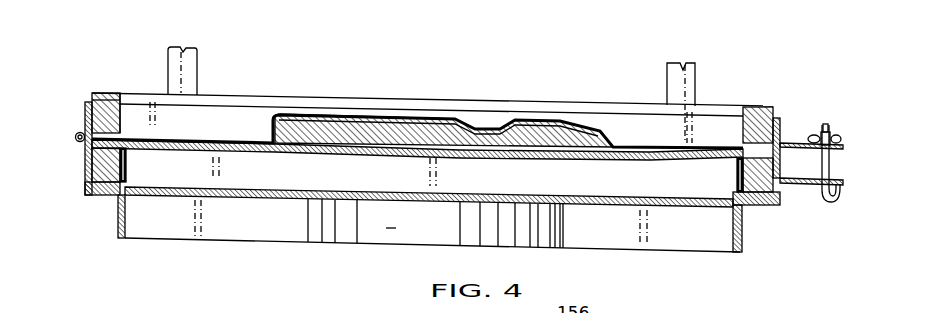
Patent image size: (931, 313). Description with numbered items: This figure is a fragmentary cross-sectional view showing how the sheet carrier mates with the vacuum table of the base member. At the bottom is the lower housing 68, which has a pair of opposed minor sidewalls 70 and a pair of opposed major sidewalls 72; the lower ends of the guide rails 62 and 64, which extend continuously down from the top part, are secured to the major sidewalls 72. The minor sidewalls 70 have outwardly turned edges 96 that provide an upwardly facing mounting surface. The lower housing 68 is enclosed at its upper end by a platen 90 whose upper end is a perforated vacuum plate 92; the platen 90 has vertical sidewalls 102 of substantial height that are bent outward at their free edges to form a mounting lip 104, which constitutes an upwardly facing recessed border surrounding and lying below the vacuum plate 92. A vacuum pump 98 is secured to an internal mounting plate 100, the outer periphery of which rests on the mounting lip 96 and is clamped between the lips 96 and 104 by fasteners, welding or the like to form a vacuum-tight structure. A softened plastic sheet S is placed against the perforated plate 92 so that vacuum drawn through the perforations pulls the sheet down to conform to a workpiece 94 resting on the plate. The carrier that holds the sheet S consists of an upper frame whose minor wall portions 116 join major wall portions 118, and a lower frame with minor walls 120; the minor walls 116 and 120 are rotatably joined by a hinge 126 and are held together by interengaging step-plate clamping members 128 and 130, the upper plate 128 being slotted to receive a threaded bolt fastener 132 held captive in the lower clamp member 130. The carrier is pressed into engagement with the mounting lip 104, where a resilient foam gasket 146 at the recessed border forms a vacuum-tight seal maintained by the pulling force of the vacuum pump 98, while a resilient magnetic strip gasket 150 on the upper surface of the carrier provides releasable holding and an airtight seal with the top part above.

The plastic sheet S is at (308, 116).
The guide rail 62 is at (680, 78).
The guide rail 64 is at (188, 65).
The lower housing 68 is at (640, 249).
The minor sidewall 70 is at (118, 224).
The major sidewall 72 is at (263, 236).
The platen 90 is at (617, 161).
The perforated vacuum plate 92 is at (455, 150).
The workpiece 94 is at (347, 130).
The outwardly turned edge 96 is at (106, 196).
The vacuum pump 98 is at (392, 229).
The internal mounting plate 100 is at (252, 196).
The vertical sidewall 102 is at (128, 165).
The mounting lip 104 is at (88, 180).
The minor wall portion 116 is at (120, 110).
The major wall portion 118 is at (228, 113).
The minor wall 120 is at (733, 165).
The hinge 126 is at (78, 134).
The upper clamp member 128 is at (797, 143).
The lower clamp member 130 is at (838, 205).
The threaded bolt fastener 132 is at (832, 150).
The gasket 146 is at (780, 192).
The resilient magnetic strip gasket 150 is at (93, 93).